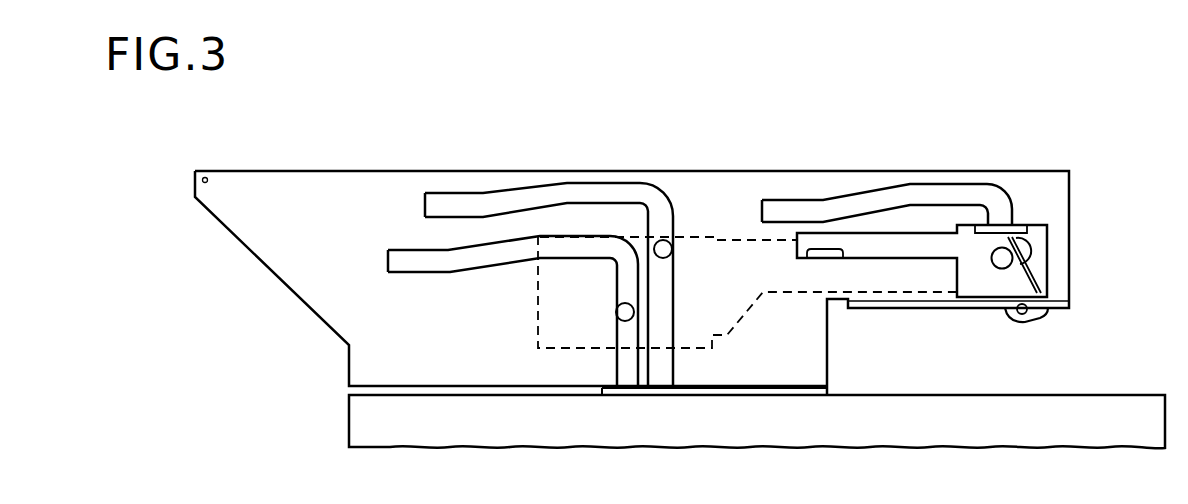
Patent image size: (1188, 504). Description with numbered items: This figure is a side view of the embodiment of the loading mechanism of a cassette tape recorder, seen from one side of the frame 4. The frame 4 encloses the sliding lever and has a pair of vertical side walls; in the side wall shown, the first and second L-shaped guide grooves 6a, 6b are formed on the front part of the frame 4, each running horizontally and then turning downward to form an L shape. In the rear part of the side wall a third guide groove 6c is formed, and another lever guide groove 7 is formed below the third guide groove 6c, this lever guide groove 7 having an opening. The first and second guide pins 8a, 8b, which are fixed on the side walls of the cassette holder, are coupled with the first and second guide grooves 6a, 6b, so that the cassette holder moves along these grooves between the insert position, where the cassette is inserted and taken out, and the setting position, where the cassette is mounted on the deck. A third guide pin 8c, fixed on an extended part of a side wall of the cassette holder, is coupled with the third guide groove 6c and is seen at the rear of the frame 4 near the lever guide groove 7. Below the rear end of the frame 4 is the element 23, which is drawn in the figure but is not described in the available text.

The frame 4 is at (331, 190).
The first L-shaped guide groove 6a is at (413, 263).
The second L-shaped guide groove 6b is at (507, 202).
The third guide groove 6c is at (905, 198).
The lever guide groove 7 is at (860, 243).
The first guide pin 8a is at (625, 312).
The second guide pin 8b is at (665, 250).
The third guide pin 8c is at (1003, 255).
The lower roller 23 is at (982, 292).